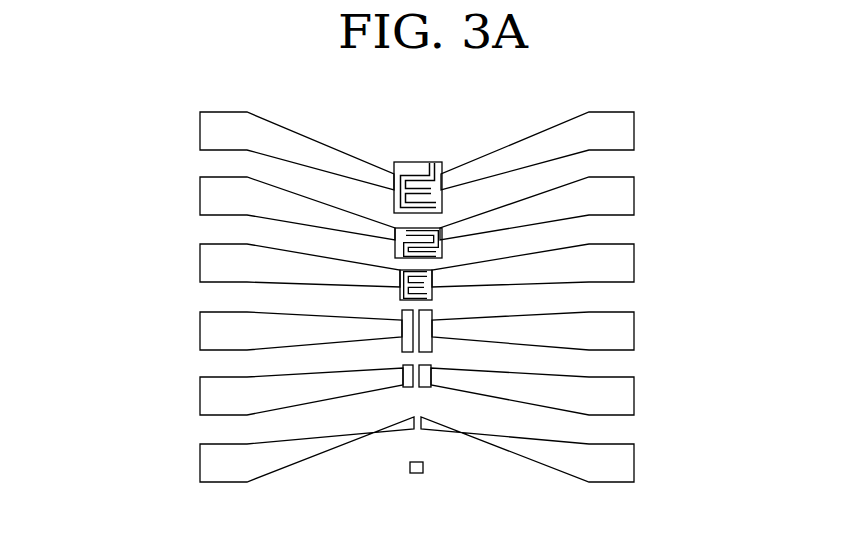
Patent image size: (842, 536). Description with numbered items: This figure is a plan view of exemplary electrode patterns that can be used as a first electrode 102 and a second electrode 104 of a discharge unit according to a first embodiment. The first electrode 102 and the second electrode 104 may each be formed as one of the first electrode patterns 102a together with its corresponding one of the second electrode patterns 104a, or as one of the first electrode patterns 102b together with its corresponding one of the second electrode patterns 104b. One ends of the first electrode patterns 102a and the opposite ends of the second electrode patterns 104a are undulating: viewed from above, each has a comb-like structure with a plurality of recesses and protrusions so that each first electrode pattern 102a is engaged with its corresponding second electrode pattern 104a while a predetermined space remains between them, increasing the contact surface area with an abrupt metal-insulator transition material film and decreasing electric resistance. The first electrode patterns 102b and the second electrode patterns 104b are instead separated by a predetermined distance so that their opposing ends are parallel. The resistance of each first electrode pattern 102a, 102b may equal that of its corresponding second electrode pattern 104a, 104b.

The first electrode 102 is at (237, 297).
The first electrode patterns 102a is at (190, 112).
The first electrode patterns 102b is at (268, 397).
The second electrode 104 is at (599, 297).
The second electrode patterns 104a is at (650, 112).
The second electrode patterns 104b is at (568, 397).